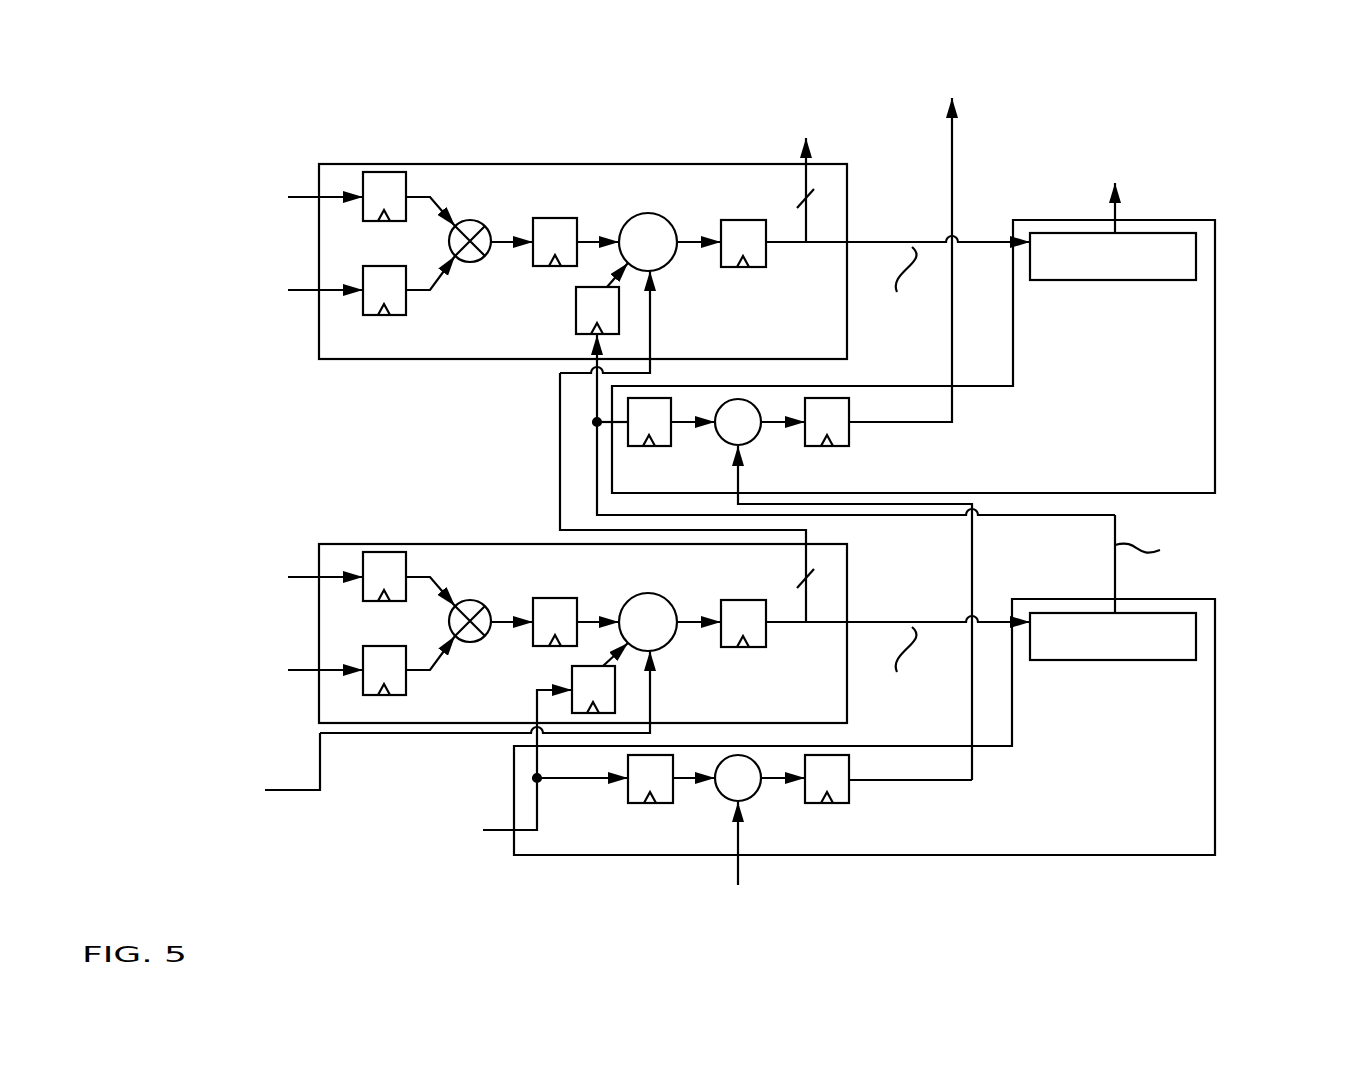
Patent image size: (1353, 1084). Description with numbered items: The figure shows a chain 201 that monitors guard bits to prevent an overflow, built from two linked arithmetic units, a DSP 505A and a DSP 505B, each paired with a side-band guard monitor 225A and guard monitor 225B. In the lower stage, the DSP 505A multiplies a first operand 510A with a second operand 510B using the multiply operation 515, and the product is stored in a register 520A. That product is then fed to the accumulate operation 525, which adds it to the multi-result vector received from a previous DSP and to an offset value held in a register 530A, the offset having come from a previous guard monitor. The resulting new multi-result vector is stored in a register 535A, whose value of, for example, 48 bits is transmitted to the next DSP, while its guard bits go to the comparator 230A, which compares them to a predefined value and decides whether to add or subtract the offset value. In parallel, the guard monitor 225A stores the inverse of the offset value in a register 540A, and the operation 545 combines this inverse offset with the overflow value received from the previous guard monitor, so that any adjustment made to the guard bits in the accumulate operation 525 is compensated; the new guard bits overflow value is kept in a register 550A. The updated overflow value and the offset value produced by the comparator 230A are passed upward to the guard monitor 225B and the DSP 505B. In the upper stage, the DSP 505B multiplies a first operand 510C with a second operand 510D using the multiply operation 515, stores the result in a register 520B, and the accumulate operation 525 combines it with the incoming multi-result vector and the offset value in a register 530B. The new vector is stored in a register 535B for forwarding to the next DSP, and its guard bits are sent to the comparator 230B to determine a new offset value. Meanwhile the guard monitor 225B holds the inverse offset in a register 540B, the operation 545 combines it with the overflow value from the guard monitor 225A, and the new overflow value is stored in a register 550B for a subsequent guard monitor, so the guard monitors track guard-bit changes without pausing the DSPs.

The chain 201 is at (700, 494).
The DSP 505A is at (430, 543).
The DSP 505B is at (430, 163).
The first operand 510A is at (242, 587).
The second operand 510B is at (229, 681).
The first operand 510C is at (242, 207).
The second operand 510D is at (229, 301).
The multiply operation 515 is at (486, 213).
The register 520A is at (557, 597).
The register 520B is at (557, 217).
The accumulate operation 525 is at (665, 212).
The register 530A is at (572, 692).
The register 530B is at (576, 312).
The register 535A is at (760, 647).
The register 535B is at (760, 267).
The register 540A is at (673, 797).
The register 540B is at (672, 440).
The operation 545 is at (753, 442).
The register 550A is at (849, 797).
The register 550B is at (849, 440).
The comparator 230A is at (1196, 639).
The comparator 230B is at (1196, 259).
The guard monitor 225A is at (918, 774).
The guard monitor 225B is at (958, 410).
The bits 48 is at (815, 392).